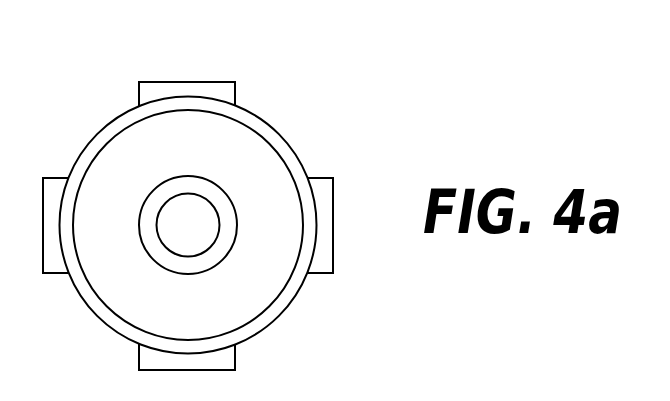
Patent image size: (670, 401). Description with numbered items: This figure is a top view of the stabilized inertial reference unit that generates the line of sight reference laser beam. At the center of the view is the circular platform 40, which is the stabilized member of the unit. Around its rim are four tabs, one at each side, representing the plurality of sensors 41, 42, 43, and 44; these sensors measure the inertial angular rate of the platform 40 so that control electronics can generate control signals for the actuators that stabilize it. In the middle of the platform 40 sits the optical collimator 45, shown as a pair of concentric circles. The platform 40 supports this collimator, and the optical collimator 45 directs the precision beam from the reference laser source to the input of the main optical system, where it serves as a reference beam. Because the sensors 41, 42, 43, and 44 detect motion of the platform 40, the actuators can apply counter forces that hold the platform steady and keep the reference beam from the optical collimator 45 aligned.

The platform 40 is at (128, 282).
The sensor 41 is at (220, 82).
The sensor 42 is at (333, 177).
The sensor 43 is at (139, 362).
The sensor 44 is at (50, 177).
The optical collimator 45 is at (205, 238).